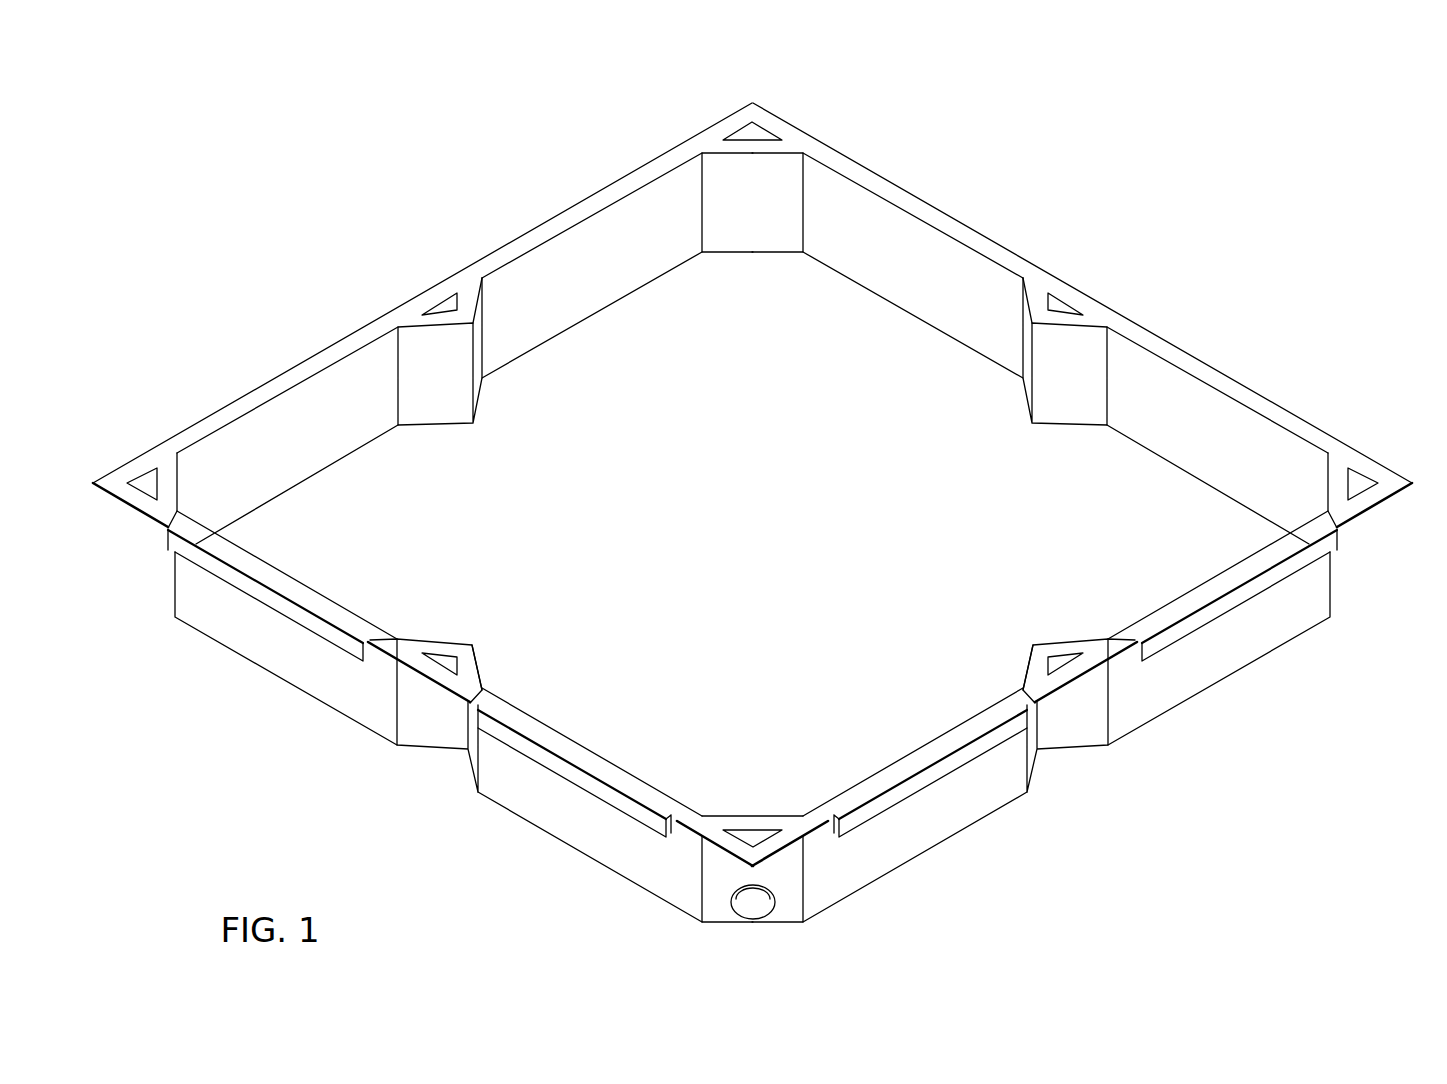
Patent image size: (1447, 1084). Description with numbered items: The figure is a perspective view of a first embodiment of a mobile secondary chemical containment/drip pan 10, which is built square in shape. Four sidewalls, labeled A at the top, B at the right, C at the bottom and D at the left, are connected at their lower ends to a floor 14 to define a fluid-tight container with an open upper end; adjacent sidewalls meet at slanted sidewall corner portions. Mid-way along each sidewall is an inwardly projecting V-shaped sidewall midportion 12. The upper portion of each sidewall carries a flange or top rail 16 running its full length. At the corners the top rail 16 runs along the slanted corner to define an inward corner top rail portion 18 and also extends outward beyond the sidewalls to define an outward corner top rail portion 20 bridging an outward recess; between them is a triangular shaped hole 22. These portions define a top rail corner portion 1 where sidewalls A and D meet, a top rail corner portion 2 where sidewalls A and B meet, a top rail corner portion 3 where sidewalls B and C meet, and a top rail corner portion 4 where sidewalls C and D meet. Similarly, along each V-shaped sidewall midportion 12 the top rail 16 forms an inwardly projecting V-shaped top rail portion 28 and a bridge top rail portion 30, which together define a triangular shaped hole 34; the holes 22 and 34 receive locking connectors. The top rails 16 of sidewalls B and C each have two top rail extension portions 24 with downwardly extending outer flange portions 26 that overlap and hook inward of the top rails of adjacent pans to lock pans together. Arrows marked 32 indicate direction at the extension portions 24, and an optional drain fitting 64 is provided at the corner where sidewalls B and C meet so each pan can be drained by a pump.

The mobile secondary chemical containment/drip pan 10 is at (1228, 175).
The V-shaped sidewall midportion 12 is at (445, 395).
The floor 14 is at (756, 562).
The top rail 16 is at (585, 205).
The inward corner top rail portion 18 is at (725, 148).
The outward corner top rail portion 20 is at (770, 123).
The triangular shaped hole 22 is at (746, 130).
The top rail extension portion 24 is at (333, 612).
The outer flange portion 26 is at (262, 593).
The V-shaped top rail portion 28 is at (488, 305).
The bridge top rail portion 30 is at (441, 295).
The insertion direction arrow 32 is at (447, 790).
The triangular shaped hole 34 is at (422, 300).
The drain fitting 64 is at (755, 905).
The top rail corner portion 1 is at (757, 102).
The top rail corner portion 2 is at (1405, 488).
The top rail corner portion 3 is at (812, 862).
The top rail corner portion 4 is at (95, 495).